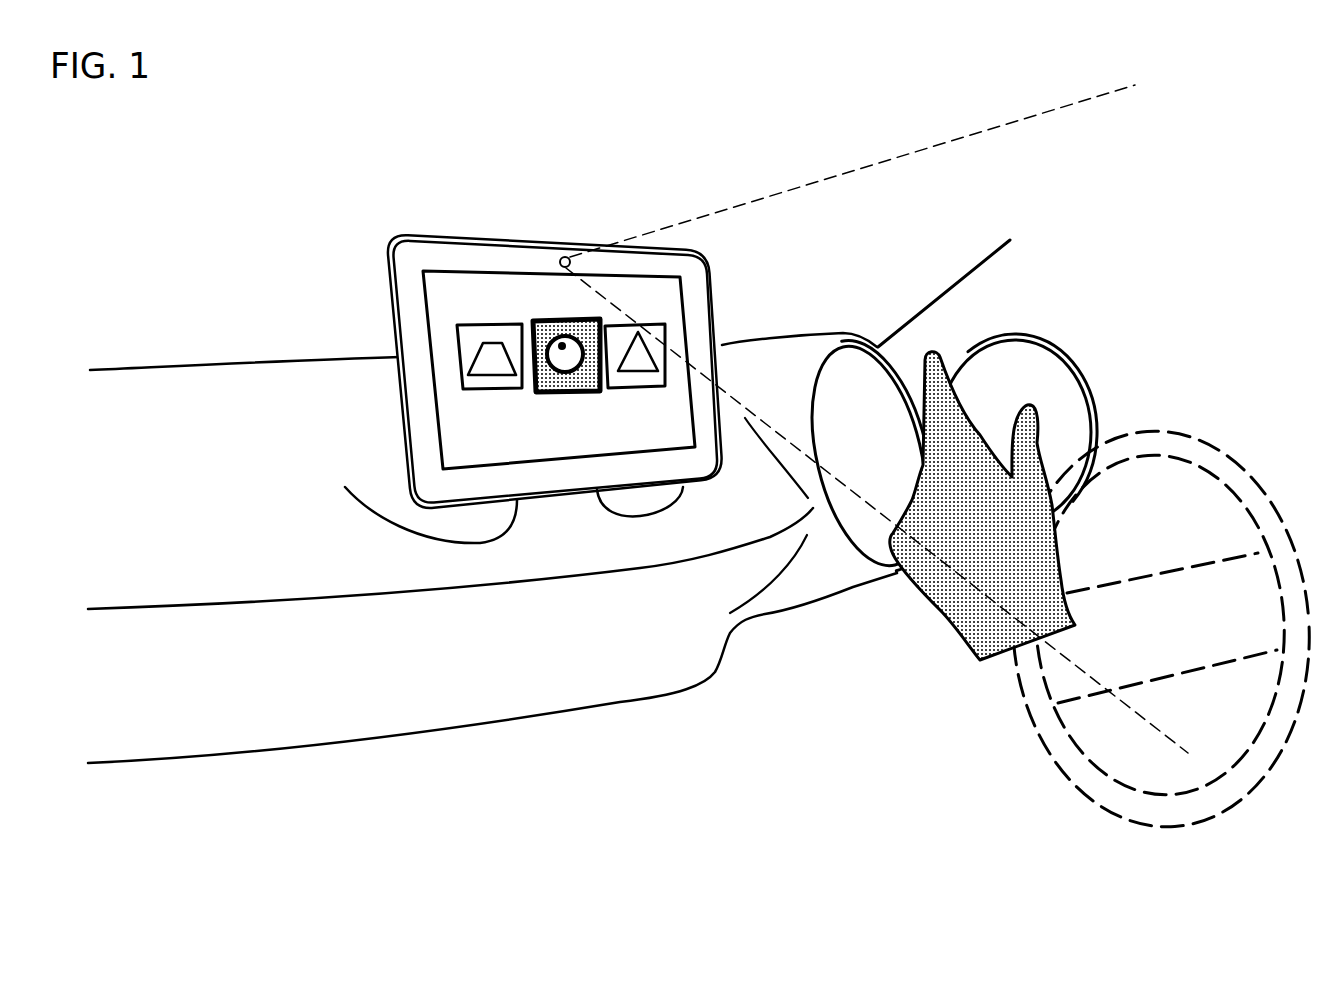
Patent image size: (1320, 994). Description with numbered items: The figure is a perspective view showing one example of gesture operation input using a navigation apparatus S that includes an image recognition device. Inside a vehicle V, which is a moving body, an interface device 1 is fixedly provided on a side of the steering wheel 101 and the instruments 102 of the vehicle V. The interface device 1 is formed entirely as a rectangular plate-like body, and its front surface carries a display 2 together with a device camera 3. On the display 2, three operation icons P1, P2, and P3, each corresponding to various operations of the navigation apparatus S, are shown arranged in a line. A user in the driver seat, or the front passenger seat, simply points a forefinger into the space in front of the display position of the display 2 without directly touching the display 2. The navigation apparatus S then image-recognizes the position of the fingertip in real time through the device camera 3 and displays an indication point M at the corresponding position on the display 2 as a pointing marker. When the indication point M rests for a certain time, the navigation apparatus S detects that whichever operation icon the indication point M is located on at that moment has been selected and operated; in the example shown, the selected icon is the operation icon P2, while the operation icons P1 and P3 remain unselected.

The navigation apparatus S is at (277, 203).
The vehicle V is at (147, 363).
The interface device 1 is at (428, 232).
The display 2 is at (445, 300).
The device camera 3 is at (560, 260).
The indication point M is at (546, 328).
The operation icon P1 is at (490, 387).
The operation icon P2 is at (567, 390).
The operation icon P3 is at (633, 387).
The steering wheel 101 is at (1219, 472).
The instruments 102 is at (993, 367).